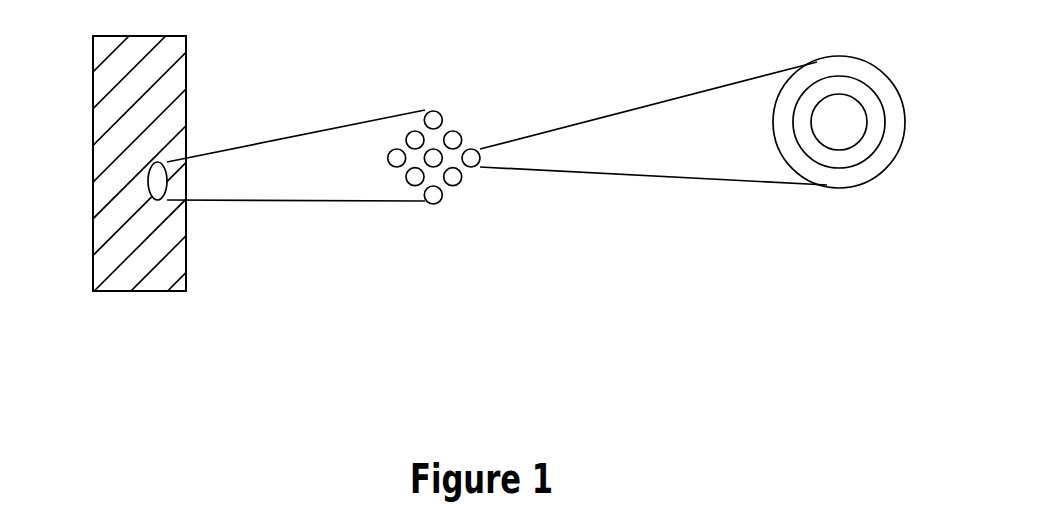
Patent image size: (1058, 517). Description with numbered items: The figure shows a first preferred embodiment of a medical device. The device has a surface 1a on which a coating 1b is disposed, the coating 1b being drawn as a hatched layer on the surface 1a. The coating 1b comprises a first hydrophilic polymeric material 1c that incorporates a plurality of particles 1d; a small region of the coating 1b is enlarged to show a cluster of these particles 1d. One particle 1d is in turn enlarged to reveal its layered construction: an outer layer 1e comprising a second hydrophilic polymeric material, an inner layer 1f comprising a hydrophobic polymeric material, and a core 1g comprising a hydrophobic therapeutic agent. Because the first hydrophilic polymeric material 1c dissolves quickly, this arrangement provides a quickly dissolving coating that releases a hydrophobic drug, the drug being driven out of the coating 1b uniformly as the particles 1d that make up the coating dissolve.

The surface 1a is at (103, 198).
The coating 1b is at (112, 256).
The first hydrophilic polymeric material 1c is at (157, 181).
The particles 1d is at (463, 188).
The outer layer 1e is at (811, 169).
The inner layer 1f is at (848, 149).
The core 1g is at (833, 114).